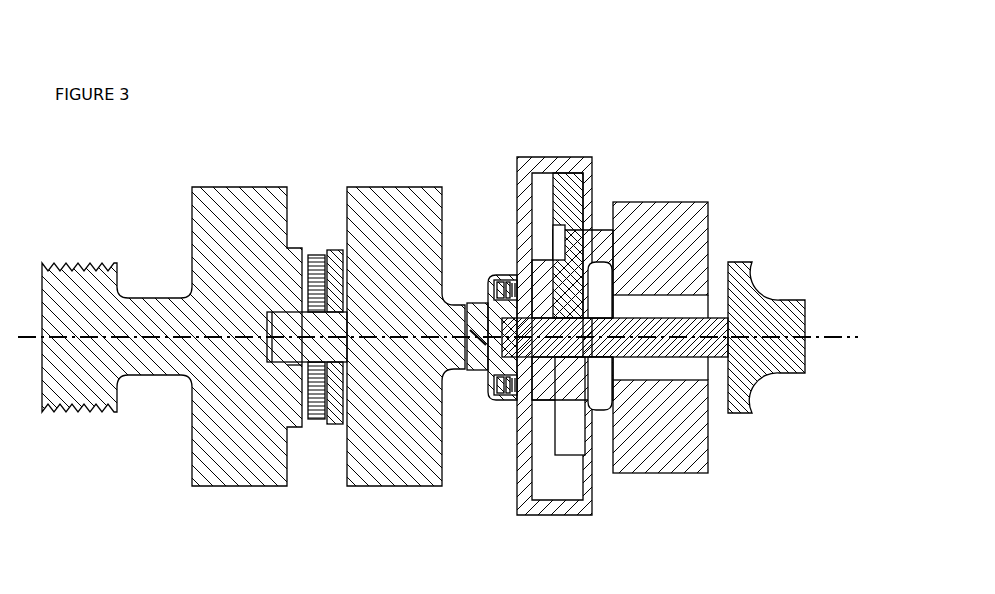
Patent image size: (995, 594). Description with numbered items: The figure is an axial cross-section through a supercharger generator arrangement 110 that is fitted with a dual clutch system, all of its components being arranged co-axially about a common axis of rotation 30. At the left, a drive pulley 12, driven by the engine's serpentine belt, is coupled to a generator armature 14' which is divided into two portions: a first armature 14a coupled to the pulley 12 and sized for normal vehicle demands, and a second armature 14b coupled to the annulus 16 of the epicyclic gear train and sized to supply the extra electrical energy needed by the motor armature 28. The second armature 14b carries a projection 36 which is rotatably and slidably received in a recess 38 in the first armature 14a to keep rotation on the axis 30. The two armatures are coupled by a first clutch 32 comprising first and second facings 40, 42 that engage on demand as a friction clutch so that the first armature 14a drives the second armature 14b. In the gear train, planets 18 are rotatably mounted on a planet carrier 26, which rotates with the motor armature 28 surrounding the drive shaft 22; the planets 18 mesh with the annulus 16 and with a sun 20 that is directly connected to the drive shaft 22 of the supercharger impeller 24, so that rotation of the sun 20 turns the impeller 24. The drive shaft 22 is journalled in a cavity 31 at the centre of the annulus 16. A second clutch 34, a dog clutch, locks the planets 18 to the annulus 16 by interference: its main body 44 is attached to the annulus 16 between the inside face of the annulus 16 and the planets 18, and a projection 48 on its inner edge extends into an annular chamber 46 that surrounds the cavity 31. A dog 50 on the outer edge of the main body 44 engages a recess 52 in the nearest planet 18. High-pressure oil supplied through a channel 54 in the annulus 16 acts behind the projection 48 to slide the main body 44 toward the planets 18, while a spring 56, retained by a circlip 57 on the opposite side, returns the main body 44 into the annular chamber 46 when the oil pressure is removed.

The drive pulley 12 is at (172, 305).
The first armature 14a is at (240, 187).
The second armature 14b is at (388, 187).
The generator armature 14' is at (172, 329).
The annulus 16 is at (548, 157).
The planets 18 is at (570, 190).
The sun 20 is at (572, 348).
The drive shaft 22 is at (672, 358).
The impeller 24 is at (772, 345).
The planet carrier 26 is at (600, 245).
The motor armature 28 is at (690, 249).
The axis of rotation 30 is at (858, 337).
The cavity 31 is at (537, 360).
The first clutch 32 is at (322, 335).
The second clutch 34 is at (496, 336).
The projection 36 is at (293, 325).
The recess 38 is at (280, 370).
The first facing 40 is at (315, 420).
The second facing 42 is at (335, 424).
The main body 44 is at (497, 384).
The annular chamber 46 is at (510, 380).
The projection 48 is at (508, 287).
The dog 50 is at (547, 243).
The recess 52 is at (588, 261).
The channel 54 is at (482, 313).
The spring 56 is at (518, 378).
The circlip 57 is at (527, 378).
The supercharger generator arrangement 110 is at (454, 325).